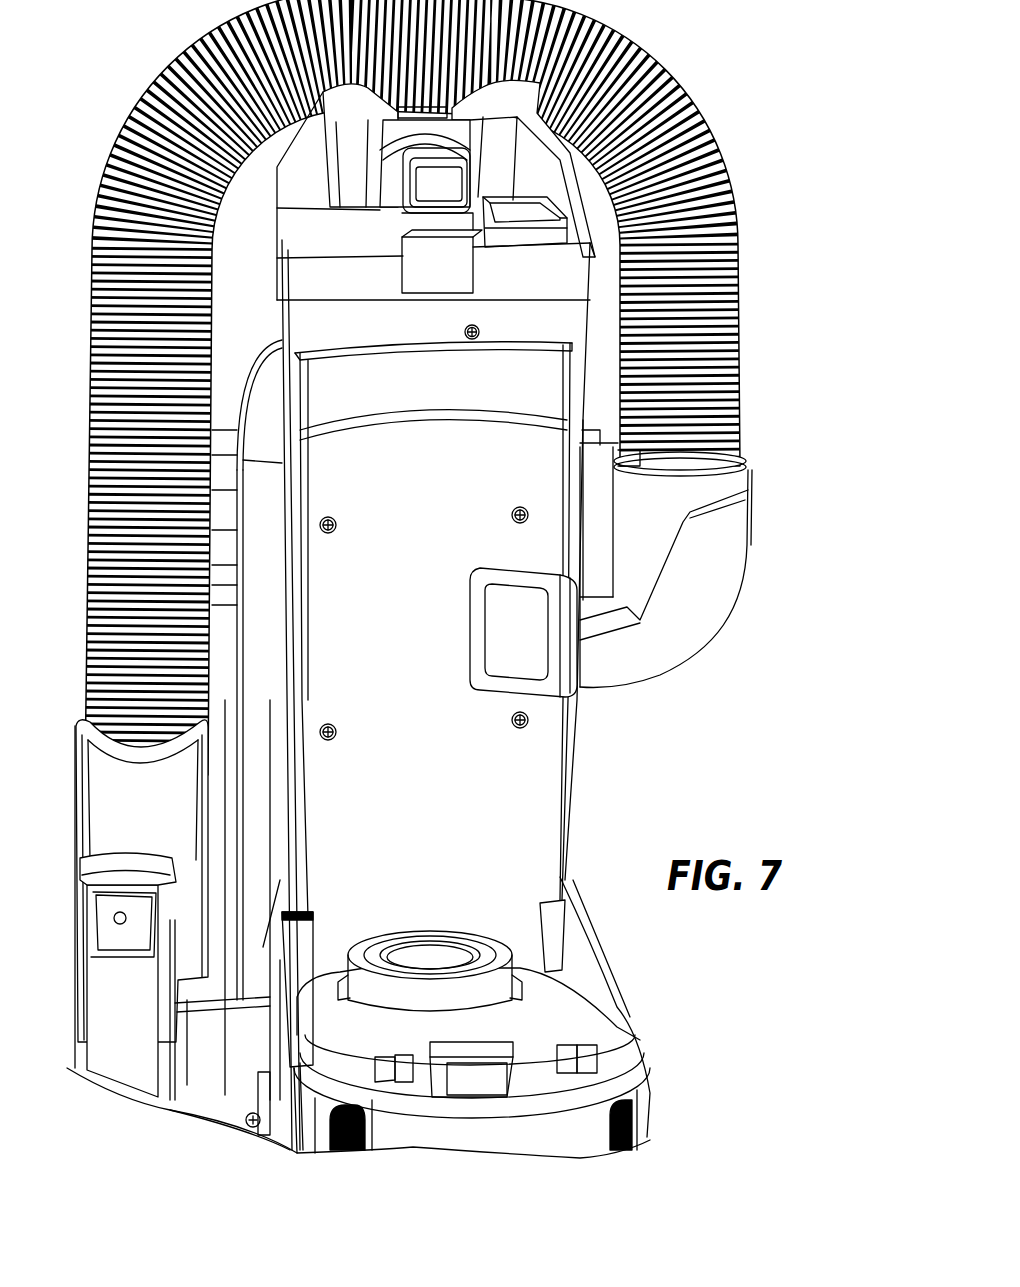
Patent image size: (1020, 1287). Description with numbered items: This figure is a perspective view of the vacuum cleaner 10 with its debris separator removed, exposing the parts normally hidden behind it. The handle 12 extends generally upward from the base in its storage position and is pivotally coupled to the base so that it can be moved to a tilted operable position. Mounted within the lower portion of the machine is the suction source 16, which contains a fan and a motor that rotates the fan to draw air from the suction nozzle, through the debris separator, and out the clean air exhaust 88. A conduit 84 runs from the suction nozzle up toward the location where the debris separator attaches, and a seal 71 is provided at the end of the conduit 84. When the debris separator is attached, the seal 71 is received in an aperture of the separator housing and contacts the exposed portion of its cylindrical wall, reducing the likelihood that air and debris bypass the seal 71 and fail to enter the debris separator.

The vacuum cleaner 10 is at (790, 173).
The handle 12 is at (409, 616).
The suction source 16 is at (637, 1083).
The seal 71 is at (473, 628).
The conduit 84 is at (737, 337).
The clean air exhaust 88 is at (327, 1133).